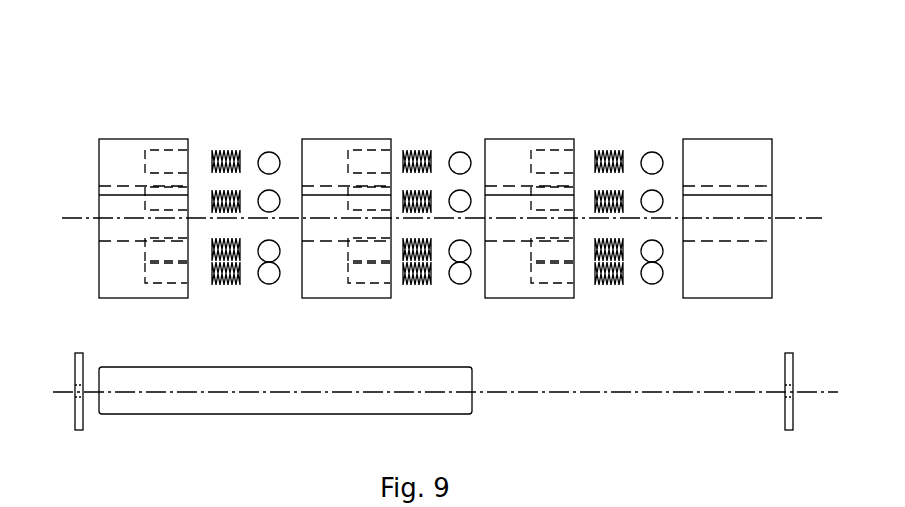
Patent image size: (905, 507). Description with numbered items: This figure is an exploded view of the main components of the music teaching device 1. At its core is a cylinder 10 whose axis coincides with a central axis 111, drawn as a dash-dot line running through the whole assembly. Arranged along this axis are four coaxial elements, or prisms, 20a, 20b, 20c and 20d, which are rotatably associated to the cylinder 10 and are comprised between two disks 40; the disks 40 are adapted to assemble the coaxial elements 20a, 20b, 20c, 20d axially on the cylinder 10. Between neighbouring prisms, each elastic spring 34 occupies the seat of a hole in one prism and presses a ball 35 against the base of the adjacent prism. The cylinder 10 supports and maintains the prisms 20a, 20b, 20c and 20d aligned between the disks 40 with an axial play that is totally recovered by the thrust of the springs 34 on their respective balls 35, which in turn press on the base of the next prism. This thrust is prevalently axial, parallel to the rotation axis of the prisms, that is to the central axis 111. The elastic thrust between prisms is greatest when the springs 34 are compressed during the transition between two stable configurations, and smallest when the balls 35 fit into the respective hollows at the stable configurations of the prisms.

The music teaching device 1 is at (63, 72).
The cylinder 10 is at (256, 400).
The coaxial element (prism) 20a is at (121, 167).
The coaxial element (prism) 20b is at (327, 168).
The coaxial element (prism) 20c is at (507, 170).
The coaxial element (prism) 20d is at (722, 167).
The elastic spring 34 is at (230, 150).
The ball 35 is at (270, 163).
The disk 40 is at (79, 429).
The central axis 111 is at (788, 220).